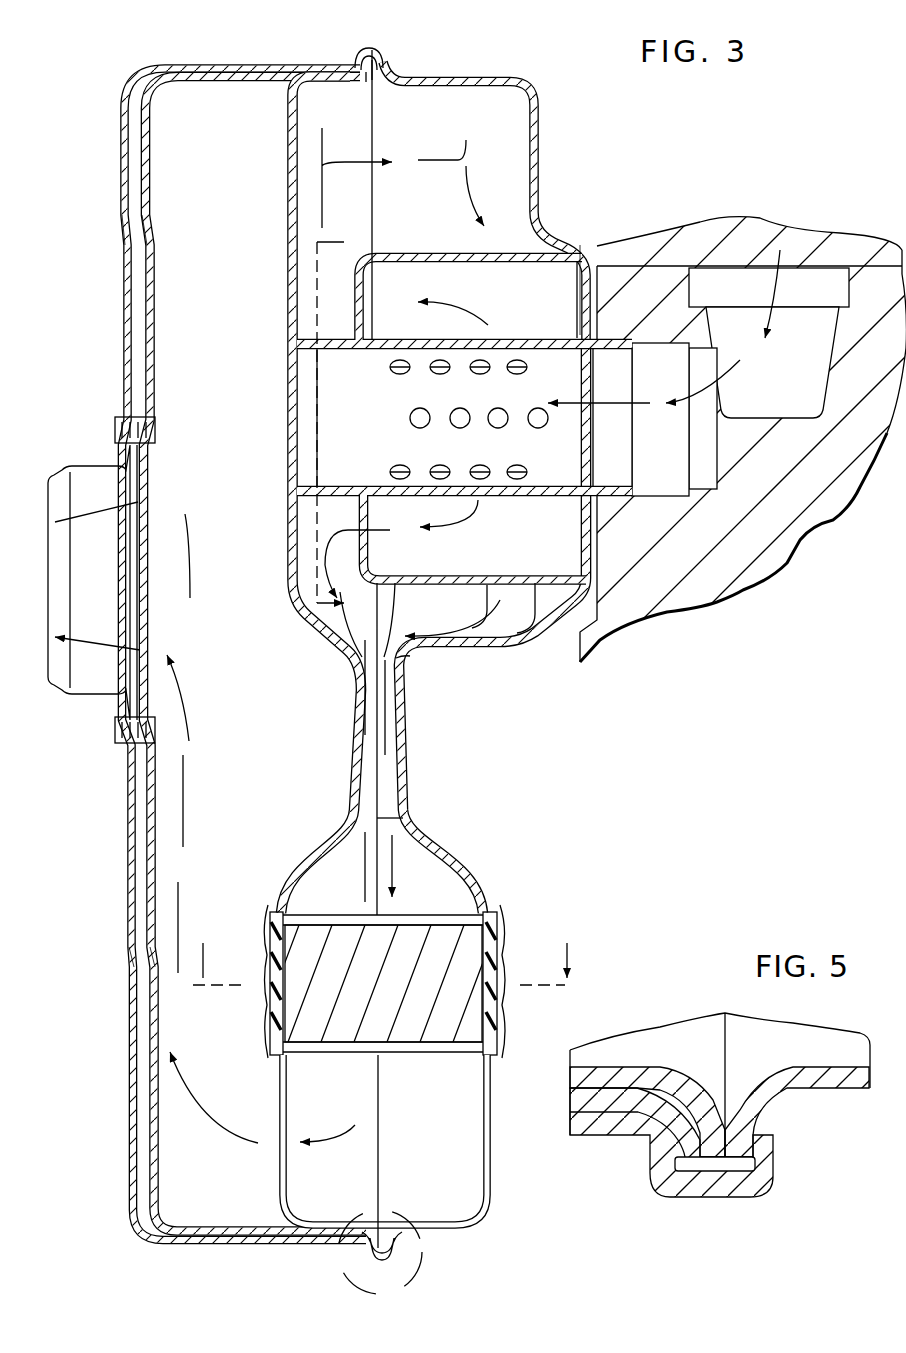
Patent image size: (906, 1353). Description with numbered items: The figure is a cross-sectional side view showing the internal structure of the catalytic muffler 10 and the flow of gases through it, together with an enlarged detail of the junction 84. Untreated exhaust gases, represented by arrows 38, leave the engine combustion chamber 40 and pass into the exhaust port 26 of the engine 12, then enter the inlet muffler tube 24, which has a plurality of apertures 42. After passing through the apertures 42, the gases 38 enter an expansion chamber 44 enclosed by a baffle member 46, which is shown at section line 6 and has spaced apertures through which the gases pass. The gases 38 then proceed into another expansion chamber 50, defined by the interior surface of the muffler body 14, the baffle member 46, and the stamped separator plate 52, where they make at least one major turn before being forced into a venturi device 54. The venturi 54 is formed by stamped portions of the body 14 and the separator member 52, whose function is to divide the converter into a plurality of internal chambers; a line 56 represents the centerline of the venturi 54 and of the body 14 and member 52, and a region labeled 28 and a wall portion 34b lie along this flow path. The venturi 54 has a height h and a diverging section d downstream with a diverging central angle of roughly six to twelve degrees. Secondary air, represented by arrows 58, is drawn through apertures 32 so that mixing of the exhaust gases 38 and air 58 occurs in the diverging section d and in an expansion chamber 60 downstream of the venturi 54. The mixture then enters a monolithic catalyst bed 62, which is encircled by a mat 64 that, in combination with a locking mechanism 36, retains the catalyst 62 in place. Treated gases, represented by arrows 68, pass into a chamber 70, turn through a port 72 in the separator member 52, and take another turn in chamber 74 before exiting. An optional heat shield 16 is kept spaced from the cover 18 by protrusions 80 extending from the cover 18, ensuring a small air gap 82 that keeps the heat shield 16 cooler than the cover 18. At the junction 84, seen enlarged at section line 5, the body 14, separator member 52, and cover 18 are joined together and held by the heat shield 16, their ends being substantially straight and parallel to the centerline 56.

In FIG. 3, the catalytic muffler 10 is at (442, 74).
In FIG. 3, the engine 12 is at (797, 555).
In FIG. 3, the muffler body 14 is at (541, 128).
In FIG. 5, the muffler body 14 is at (846, 1071).
In FIG. 3, the heat shield 16 is at (128, 80).
In FIG. 5, the heat shield 16 is at (733, 1197).
In FIG. 3, the cover 18 is at (152, 100).
In FIG. 5, the cover 18 is at (570, 1113).
In FIG. 3, the inlet muffler tube 24 is at (370, 348).
In FIG. 3, the exhaust port 26 is at (671, 372).
In FIG. 3, the seal 28 is at (584, 252).
In FIG. 3, the apertures 32 is at (389, 634).
In FIG. 3, the neck wall 34b is at (357, 665).
In FIG. 3, the locking mechanism 36 is at (503, 954).
In FIG. 3, the untreated exhaust gases 38 is at (338, 870).
In FIG. 3, the engine combustion chamber 40 is at (741, 230).
In FIG. 3, the apertures 42 is at (518, 388).
In FIG. 3, the expansion chamber 44 is at (499, 285).
In FIG. 3, the baffle member 46 is at (401, 256).
In FIG. 3, the expansion chamber 50 is at (418, 118).
In FIG. 3, the separator plate 52 is at (289, 182).
In FIG. 5, the separator plate 52 is at (636, 1074).
In FIG. 3, the venturi device 54 is at (352, 727).
In FIG. 3, the centerline 56 is at (404, 821).
In FIG. 5, the centerline 56 is at (732, 1056).
In FIG. 3, the secondary air 58 is at (410, 671).
In FIG. 3, the expansion chamber 60 is at (439, 888).
In FIG. 3, the monolithic catalyst bed 62 is at (440, 1015).
In FIG. 3, the mat 64 is at (492, 918).
In FIG. 3, the treated exhaust gases 68 is at (105, 640).
In FIG. 3, the chamber 70 is at (449, 1162).
In FIG. 3, the port 72 is at (281, 1098).
In FIG. 3, the chamber 74 is at (278, 845).
In FIG. 3, the protrusions 80 is at (133, 232).
In FIG. 3, the air gap 82 is at (128, 1068).
In FIG. 3, the junction 84 is at (386, 50).
In FIG. 5, the junction 84 is at (760, 1118).
In FIG. 3, the section line 5- 5 is at (346, 1219).
In FIG. 3, the section line 6- 6 is at (344, 419).
In FIG. 3, the venturi height h is at (407, 662).
In FIG. 3, the diverging section d is at (392, 792).